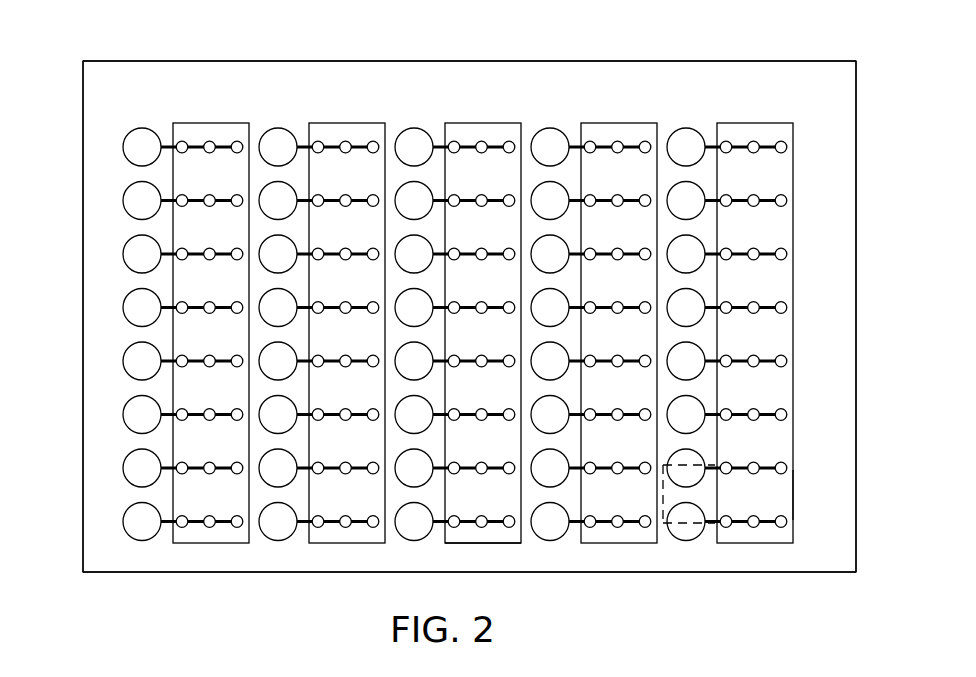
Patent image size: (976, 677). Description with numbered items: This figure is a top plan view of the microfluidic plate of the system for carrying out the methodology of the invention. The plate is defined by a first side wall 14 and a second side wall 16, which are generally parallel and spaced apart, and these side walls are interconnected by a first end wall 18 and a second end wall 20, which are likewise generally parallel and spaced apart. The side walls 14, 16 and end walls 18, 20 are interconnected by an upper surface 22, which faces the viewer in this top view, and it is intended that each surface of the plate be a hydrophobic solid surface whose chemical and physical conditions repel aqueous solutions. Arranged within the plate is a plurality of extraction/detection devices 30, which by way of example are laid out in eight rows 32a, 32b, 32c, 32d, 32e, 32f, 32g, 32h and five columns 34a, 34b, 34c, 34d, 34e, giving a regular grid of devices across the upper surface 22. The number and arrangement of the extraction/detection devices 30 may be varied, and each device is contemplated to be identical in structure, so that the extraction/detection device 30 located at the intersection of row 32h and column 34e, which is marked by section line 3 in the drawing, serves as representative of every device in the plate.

The first side wall 14 is at (384, 61).
The second side wall 16 is at (312, 573).
The first end wall 18 is at (82, 315).
The second end wall 20 is at (856, 283).
The upper surface 22 is at (846, 125).
The extraction/detection device 30 is at (456, 541).
The section line 3- 3 is at (795, 465).
The first row 32a is at (112, 112).
The second row 32b is at (110, 168).
The third row 32c is at (114, 216).
The fourth row 32d is at (115, 266).
The fifth row 32e is at (118, 340).
The sixth row 32f is at (112, 393).
The seventh row 32g is at (113, 450).
The eighth row 32h is at (114, 500).
The first column 34a is at (181, 80).
The second column 34b is at (319, 80).
The third column 34c is at (467, 88).
The fourth column 34d is at (604, 88).
The fifth column 34e is at (742, 88).